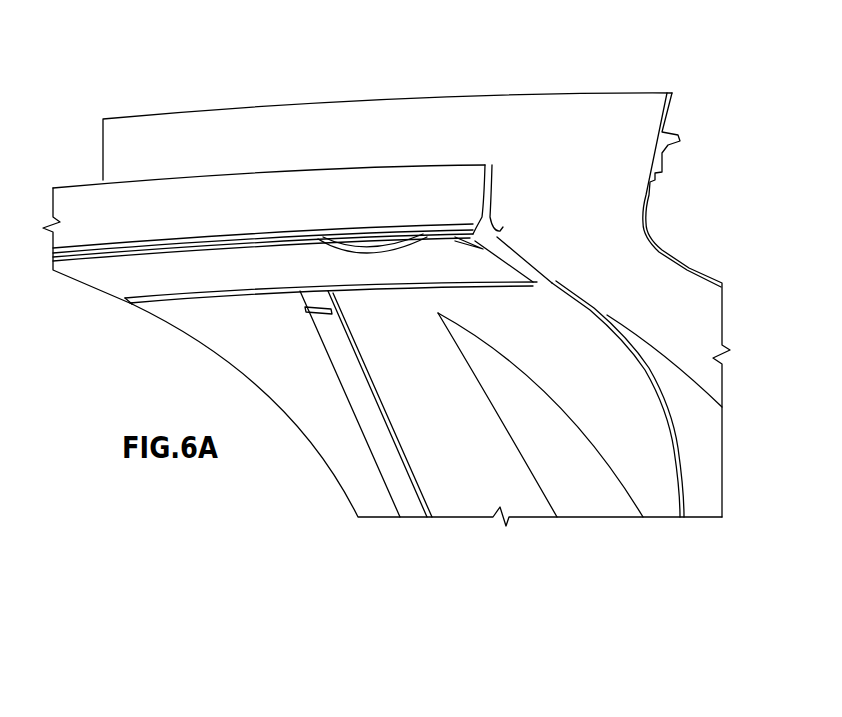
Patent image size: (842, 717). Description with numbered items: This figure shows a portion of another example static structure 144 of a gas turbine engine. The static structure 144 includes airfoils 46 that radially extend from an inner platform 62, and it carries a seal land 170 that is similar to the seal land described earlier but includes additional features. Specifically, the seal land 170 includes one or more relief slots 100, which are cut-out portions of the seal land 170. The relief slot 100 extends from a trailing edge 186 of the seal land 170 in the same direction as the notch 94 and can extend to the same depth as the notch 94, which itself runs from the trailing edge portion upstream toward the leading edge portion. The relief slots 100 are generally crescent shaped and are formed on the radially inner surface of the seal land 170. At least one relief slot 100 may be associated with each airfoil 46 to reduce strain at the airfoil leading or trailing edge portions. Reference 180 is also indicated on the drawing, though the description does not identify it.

The static structure 144 is at (546, 68).
The airfoil 46 is at (598, 151).
The platform / shroud 180 is at (219, 284).
The trailing edge 186 is at (215, 236).
The notch 94 is at (498, 233).
The relief slot 100 is at (379, 257).
The seal land 170 is at (279, 272).
The inner platform 62 is at (575, 325).